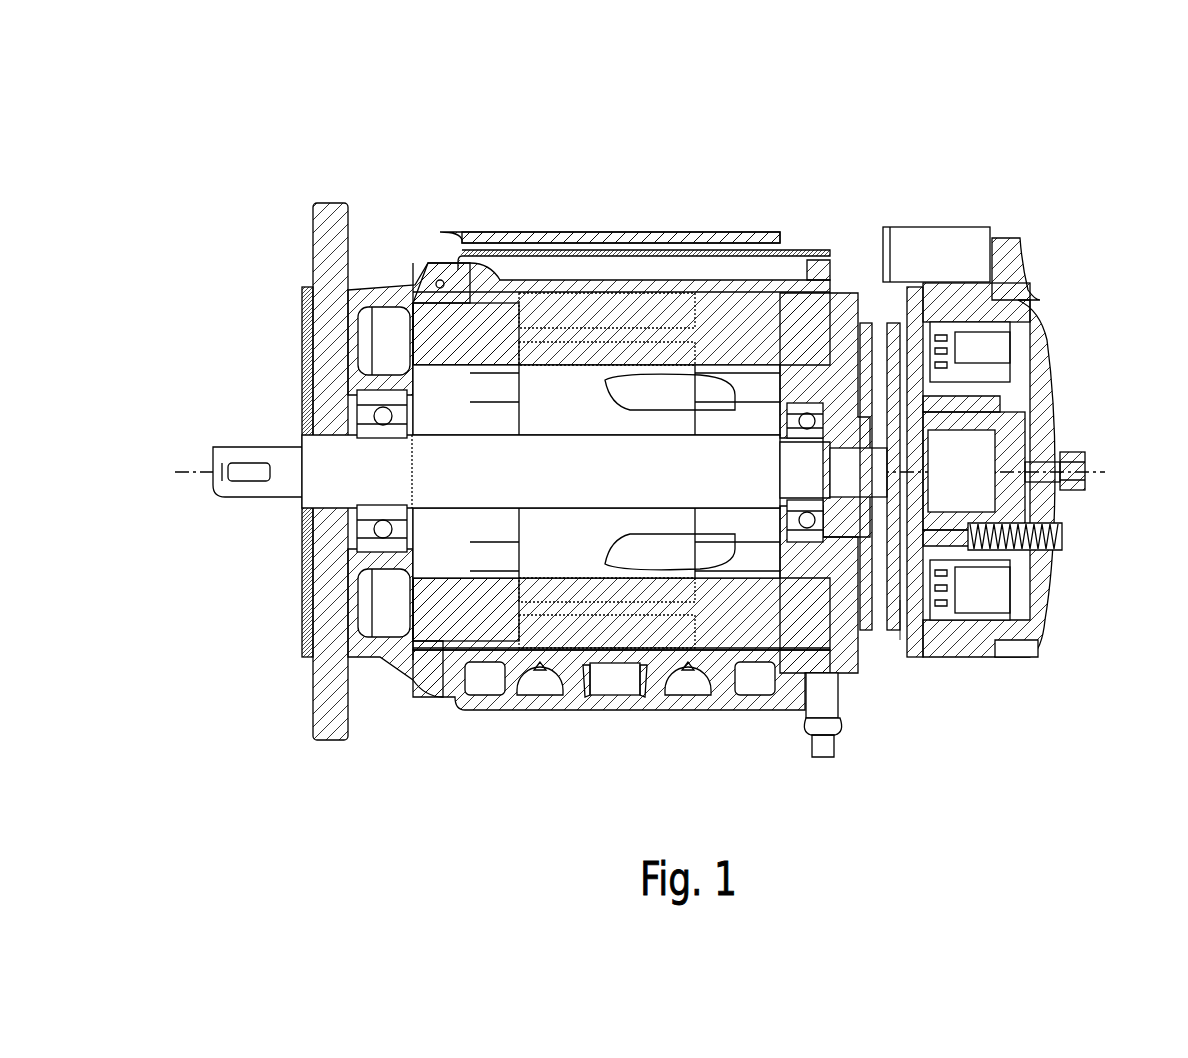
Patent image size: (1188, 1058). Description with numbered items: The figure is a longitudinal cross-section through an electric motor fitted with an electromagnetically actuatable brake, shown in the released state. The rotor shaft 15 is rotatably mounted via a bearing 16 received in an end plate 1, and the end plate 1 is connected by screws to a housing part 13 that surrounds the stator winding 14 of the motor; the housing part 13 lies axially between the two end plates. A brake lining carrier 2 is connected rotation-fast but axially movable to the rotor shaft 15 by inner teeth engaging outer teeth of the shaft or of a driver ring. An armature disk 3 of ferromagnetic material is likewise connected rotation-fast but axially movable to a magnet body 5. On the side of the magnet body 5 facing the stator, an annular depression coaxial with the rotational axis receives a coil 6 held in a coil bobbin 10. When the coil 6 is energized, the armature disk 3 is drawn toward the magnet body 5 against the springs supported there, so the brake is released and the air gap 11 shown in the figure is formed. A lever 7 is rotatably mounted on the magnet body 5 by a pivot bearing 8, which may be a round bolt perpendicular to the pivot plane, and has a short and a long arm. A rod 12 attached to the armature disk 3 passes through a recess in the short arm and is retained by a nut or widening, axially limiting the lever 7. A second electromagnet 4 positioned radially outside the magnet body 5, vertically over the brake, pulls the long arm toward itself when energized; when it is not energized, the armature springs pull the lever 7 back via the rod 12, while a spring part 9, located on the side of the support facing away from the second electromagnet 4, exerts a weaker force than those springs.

The end plate 1 is at (823, 273).
The brake lining carrier 2 is at (917, 303).
The armature disk 3 is at (968, 305).
The second electromagnet 4 is at (932, 243).
The magnet body 5 is at (1010, 287).
The coil 6 is at (990, 343).
The lever 7 is at (1012, 253).
The pivot bearing 8 is at (1030, 442).
The spring part 9 is at (1033, 535).
The coil bobbin 10 is at (935, 613).
The air gap 11 is at (903, 623).
The rod 12 is at (1033, 475).
The housing part 13 is at (452, 278).
The stator winding 14 is at (443, 332).
The rotor shaft 15 is at (805, 452).
The bearing 16 is at (878, 333).